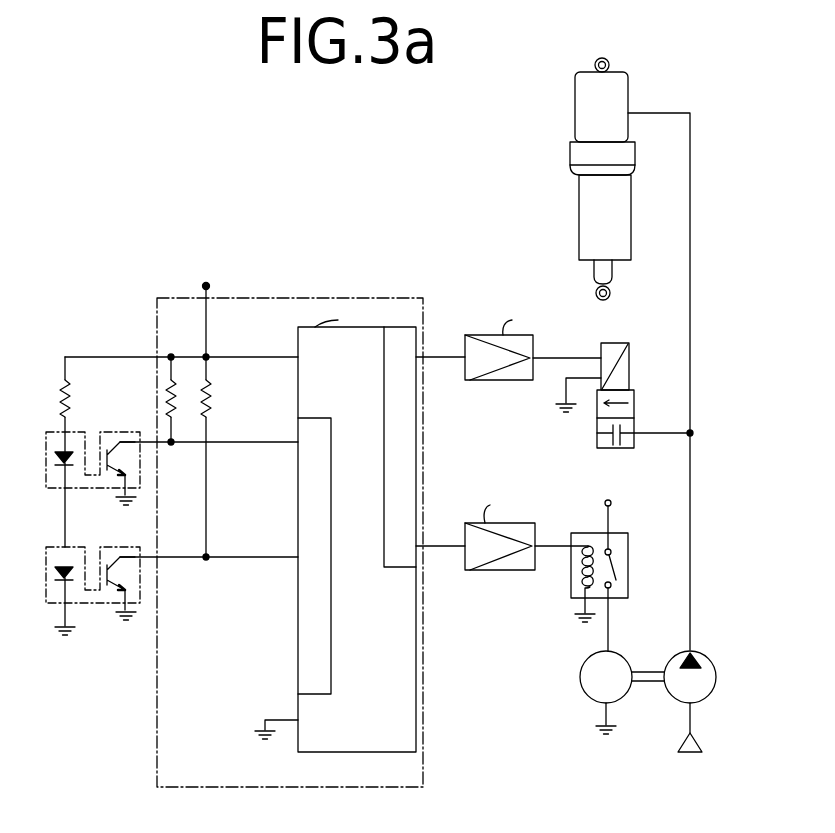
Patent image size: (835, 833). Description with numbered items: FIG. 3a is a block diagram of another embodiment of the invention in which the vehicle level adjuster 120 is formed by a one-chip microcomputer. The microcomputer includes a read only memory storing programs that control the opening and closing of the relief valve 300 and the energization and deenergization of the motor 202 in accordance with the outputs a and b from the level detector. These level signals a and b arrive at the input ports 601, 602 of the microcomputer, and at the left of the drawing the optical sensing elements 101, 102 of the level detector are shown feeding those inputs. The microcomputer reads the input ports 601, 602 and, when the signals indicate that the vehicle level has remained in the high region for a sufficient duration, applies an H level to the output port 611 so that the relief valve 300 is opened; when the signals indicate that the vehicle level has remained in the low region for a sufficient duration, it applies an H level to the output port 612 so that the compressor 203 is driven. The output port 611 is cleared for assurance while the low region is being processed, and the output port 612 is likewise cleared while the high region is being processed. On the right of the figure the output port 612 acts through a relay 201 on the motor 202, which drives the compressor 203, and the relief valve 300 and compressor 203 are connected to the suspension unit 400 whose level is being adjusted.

The photocoupler (upper level sensor) 101 is at (79, 432).
The photocoupler (lower level sensor) 102 is at (79, 547).
The vehicle level adjuster 120 is at (236, 298).
The relay 201 is at (628, 562).
The motor 202 is at (620, 655).
The compressor 203 is at (716, 677).
The relief valve 300 is at (634, 396).
The air suspension cylinder (shock absorber) 400 is at (628, 89).
The input port 601 is at (258, 442).
The input port 602 is at (252, 557).
The output port 611 is at (428, 356).
The output port 612 is at (430, 545).